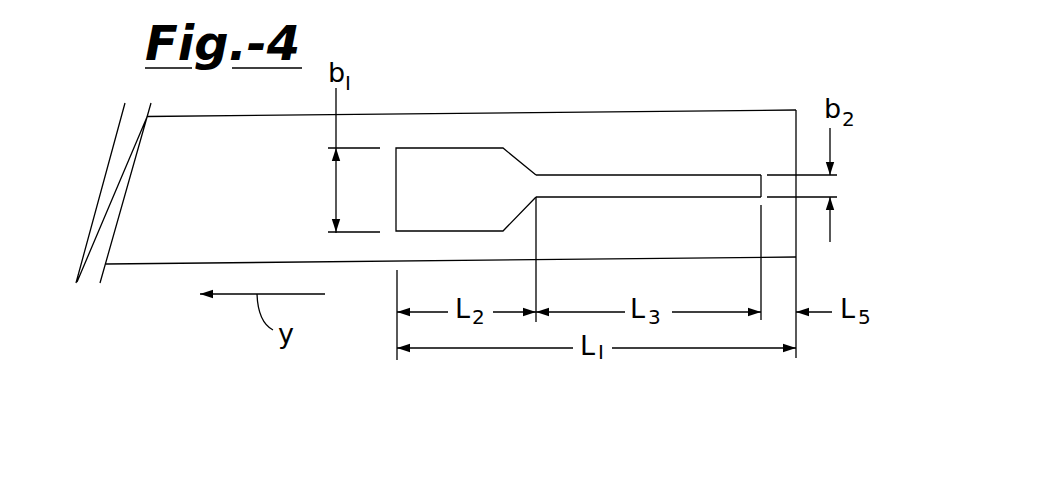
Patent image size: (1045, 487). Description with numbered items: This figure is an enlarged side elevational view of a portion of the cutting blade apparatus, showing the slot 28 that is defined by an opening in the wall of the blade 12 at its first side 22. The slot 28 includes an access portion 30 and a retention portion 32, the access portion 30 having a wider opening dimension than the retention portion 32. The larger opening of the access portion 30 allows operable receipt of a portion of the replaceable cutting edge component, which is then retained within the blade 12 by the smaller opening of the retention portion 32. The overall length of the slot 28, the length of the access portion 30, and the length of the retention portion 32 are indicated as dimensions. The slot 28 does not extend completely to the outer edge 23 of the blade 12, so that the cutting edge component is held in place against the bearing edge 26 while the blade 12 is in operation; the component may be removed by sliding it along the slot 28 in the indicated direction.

The blade 12 is at (455, 145).
The first side 22 is at (447, 112).
The outer edge 23 is at (796, 127).
The bearing edge 26 is at (755, 183).
The slot 28 is at (695, 167).
The access portion 30 is at (478, 202).
The retention portion 32 is at (620, 185).